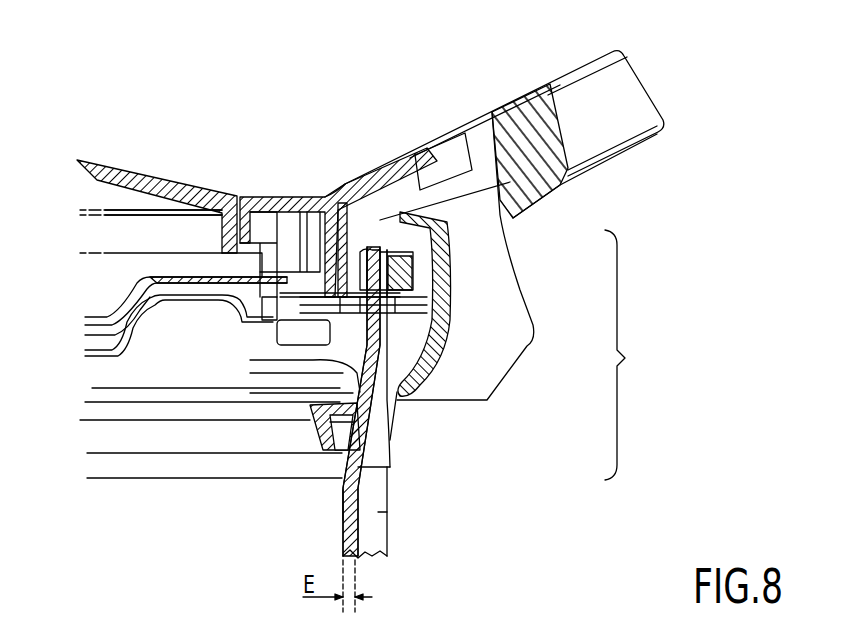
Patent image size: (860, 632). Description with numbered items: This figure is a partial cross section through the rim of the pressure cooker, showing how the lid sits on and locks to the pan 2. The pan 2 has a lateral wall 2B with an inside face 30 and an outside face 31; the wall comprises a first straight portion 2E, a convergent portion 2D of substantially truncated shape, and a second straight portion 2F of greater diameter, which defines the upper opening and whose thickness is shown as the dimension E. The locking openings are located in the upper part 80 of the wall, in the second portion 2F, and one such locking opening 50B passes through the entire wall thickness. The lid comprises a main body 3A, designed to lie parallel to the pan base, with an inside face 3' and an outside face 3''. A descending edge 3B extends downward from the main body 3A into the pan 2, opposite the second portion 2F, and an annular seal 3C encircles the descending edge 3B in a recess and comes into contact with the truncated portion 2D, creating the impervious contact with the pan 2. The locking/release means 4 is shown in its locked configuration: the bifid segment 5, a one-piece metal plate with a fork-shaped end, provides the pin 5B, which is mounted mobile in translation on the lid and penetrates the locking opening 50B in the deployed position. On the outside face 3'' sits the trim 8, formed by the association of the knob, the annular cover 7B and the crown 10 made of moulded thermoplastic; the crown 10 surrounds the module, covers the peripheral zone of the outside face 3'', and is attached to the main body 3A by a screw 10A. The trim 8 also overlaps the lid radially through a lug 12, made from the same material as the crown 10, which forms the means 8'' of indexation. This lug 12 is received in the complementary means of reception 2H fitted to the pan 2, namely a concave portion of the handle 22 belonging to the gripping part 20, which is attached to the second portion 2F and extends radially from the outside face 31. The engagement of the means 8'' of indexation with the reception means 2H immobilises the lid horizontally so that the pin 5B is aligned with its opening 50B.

The cover 7B is at (113, 173).
The outside face 3'' is at (163, 201).
The bifid segment 5 is at (203, 290).
The trim 8 is at (338, 196).
The crown 10 is at (302, 200).
The pin 5B is at (338, 205).
The locking/release means 4 is at (392, 272).
The lug 12 is at (423, 153).
The means of indexation 8'' is at (485, 100).
The complementary means of reception 2H is at (472, 118).
The gripping part 20 is at (648, 64).
The handle 22 is at (637, 107).
The locking opening 50B is at (400, 300).
The second straight portion 2F is at (400, 347).
The upper part 80 is at (632, 355).
The outside face 31 is at (400, 420).
The convergent portion 2D is at (387, 447).
The lateral wall 2B is at (392, 491).
The first straight portion 2E is at (378, 512).
The pan 2 is at (394, 533).
The inside face 30 is at (340, 515).
The inside face 3' is at (117, 414).
The main body 3A is at (240, 300).
The screw 10A is at (290, 328).
The descending edge 3B is at (347, 367).
The annular seal 3C is at (313, 407).